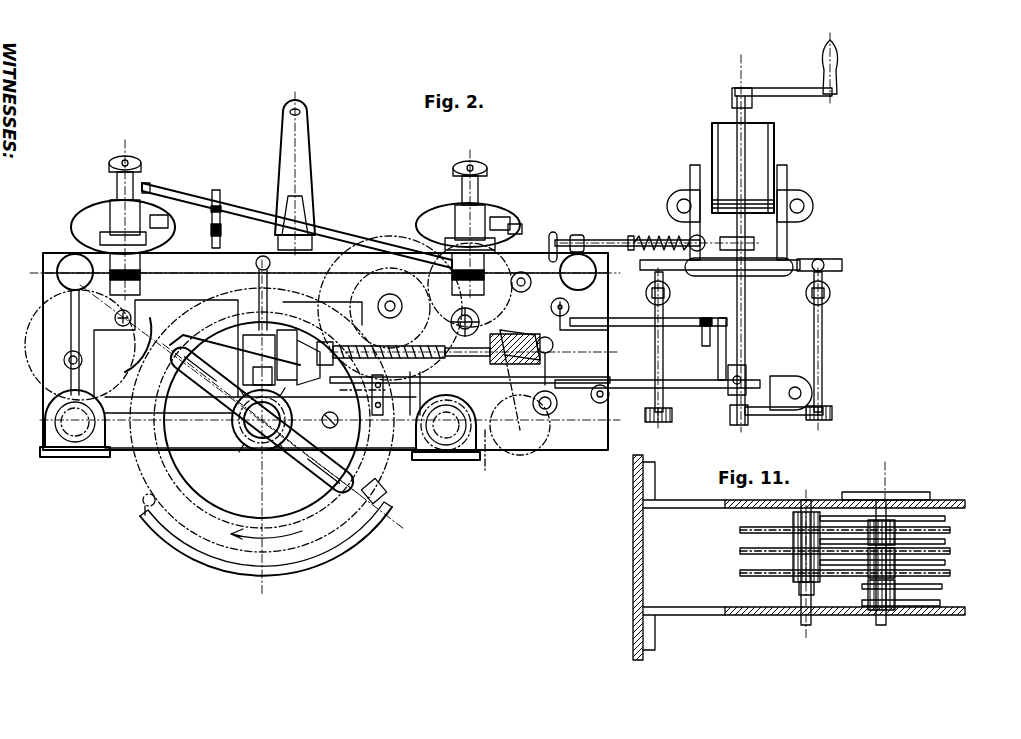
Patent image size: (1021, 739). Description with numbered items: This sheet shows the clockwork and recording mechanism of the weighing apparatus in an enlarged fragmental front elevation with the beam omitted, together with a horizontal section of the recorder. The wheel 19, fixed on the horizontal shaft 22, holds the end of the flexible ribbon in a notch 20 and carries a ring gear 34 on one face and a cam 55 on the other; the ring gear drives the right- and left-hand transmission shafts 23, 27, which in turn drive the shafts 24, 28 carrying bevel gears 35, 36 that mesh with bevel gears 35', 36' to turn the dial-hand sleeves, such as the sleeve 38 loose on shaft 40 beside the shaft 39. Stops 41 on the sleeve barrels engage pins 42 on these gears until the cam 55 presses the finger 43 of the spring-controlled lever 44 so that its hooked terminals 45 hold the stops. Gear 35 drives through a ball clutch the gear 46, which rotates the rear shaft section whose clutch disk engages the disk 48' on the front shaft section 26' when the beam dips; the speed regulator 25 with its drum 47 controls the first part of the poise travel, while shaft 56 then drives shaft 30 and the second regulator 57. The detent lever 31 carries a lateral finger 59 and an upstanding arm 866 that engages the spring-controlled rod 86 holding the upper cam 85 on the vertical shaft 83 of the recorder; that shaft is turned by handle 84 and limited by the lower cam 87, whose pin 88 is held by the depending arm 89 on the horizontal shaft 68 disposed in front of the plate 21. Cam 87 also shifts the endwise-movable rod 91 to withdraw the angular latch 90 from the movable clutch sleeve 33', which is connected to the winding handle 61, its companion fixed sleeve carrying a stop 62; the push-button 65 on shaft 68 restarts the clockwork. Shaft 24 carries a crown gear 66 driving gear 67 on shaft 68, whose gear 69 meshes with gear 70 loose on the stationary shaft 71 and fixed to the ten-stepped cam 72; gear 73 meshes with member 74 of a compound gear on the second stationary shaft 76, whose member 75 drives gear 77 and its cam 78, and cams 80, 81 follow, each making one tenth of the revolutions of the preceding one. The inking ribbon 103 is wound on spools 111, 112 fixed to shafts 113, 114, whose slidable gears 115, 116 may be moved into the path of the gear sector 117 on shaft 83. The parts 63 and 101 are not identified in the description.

In FIG. 2, the wheel 19 is at (262, 577).
In FIG. 2, the notch 20 is at (140, 518).
In FIG. 2, the plate 21 is at (45, 296).
In FIG. 2, the horizontal shaft 22 is at (240, 455).
In FIG. 2, the right-hand transmission shaft 23 is at (380, 312).
In FIG. 2, the shaft 24 is at (384, 352).
In FIG. 2, the speed regulator 25 is at (578, 236).
In FIG. 2, the front shaft section 26' is at (520, 441).
In FIG. 2, the left-hand transmission shaft 27 is at (63, 363).
In FIG. 2, the shaft 28 is at (92, 330).
In FIG. 2, the shaft 30 is at (592, 420).
In FIG. 2, the detent lever 31 is at (366, 258).
In FIG. 2, the toothed clutch sleeve 33' is at (260, 423).
In FIG. 2, the ring gear 34 is at (196, 558).
In FIG. 2, the bevel gear 35 is at (468, 249).
In FIG. 2, the bevel gear 35' is at (534, 257).
In FIG. 2, the bevel gear 36 is at (53, 269).
In FIG. 2, the bevel gear 36' is at (105, 227).
In FIG. 2, the sleeve 38 is at (114, 218).
In FIG. 2, the shaft 39 is at (452, 170).
In FIG. 2, the shaft 40 is at (132, 160).
In FIG. 2, the stop 41 is at (170, 222).
In FIG. 2, the pin 42 is at (216, 200).
In FIG. 2, the finger 43 is at (300, 272).
In FIG. 2, the lever 44 is at (250, 210).
In FIG. 2, the hooked terminal 45 is at (151, 190).
In FIG. 2, the gear 46 is at (494, 232).
In FIG. 2, the drum 47 is at (552, 395).
In FIG. 2, the clutch disk 48' is at (477, 472).
In FIG. 2, the cam 55 is at (383, 506).
In FIG. 2, the shaft 56 is at (550, 416).
In FIG. 2, the speed regulator 57 is at (604, 404).
In FIG. 2, the lateral finger 59 is at (260, 258).
In FIG. 2, the winding handle 61 is at (330, 478).
In FIG. 2, the stop 62 is at (188, 362).
In FIG. 2, the slide block 63 is at (243, 354).
In FIG. 2, the push-button 65 is at (522, 432).
In FIG. 2, the crown gear 66 is at (405, 250).
In FIG. 2, the gear 67 is at (456, 460).
In FIG. 2, the horizontal shaft 68 is at (676, 328).
In FIG. 2, the gear 69 is at (689, 294).
In FIG. 2, the gear 70 is at (707, 348).
In FIG. 11, the gear 70 is at (866, 606).
In FIG. 11, the stationary shaft 71 is at (881, 628).
In FIG. 11, the ten-stepped cam 72 is at (942, 603).
In FIG. 11, the gear 73 is at (945, 588).
In FIG. 11, the compound gear member 74 is at (704, 588).
In FIG. 11, the compound gear member 75 is at (793, 560).
In FIG. 11, the second stationary shaft 76 is at (806, 628).
In FIG. 11, the gear 77 is at (960, 566).
In FIG. 11, the cam 78 is at (950, 574).
In FIG. 11, the cam 80 is at (948, 550).
In FIG. 11, the cam 81 is at (948, 528).
In FIG. 2, the vertical shaft 83 is at (738, 118).
In FIG. 2, the handle 84 is at (771, 93).
In FIG. 2, the upper cam 85 is at (748, 243).
In FIG. 2, the spring-controlled rod 86 is at (608, 238).
In FIG. 2, the lower cam 87 is at (746, 395).
In FIG. 2, the pin 88 is at (786, 375).
In FIG. 2, the depending arm 89 is at (728, 350).
In FIG. 2, the angular latch 90 is at (334, 426).
In FIG. 2, the endwise-movable rod 91 is at (628, 390).
In FIG. 2, the base 101 is at (748, 220).
In FIG. 2, the inking ribbon 103 is at (812, 295).
In FIG. 2, the spool 111 is at (826, 263).
In FIG. 2, the spool 112 is at (640, 266).
In FIG. 2, the shaft 113 is at (822, 350).
In FIG. 2, the shaft 114 is at (656, 352).
In FIG. 2, the gear 115 is at (820, 422).
In FIG. 2, the gear 116 is at (660, 424).
In FIG. 2, the gear sector 117 is at (766, 416).
In FIG. 2, the upstanding arm 866 is at (555, 240).